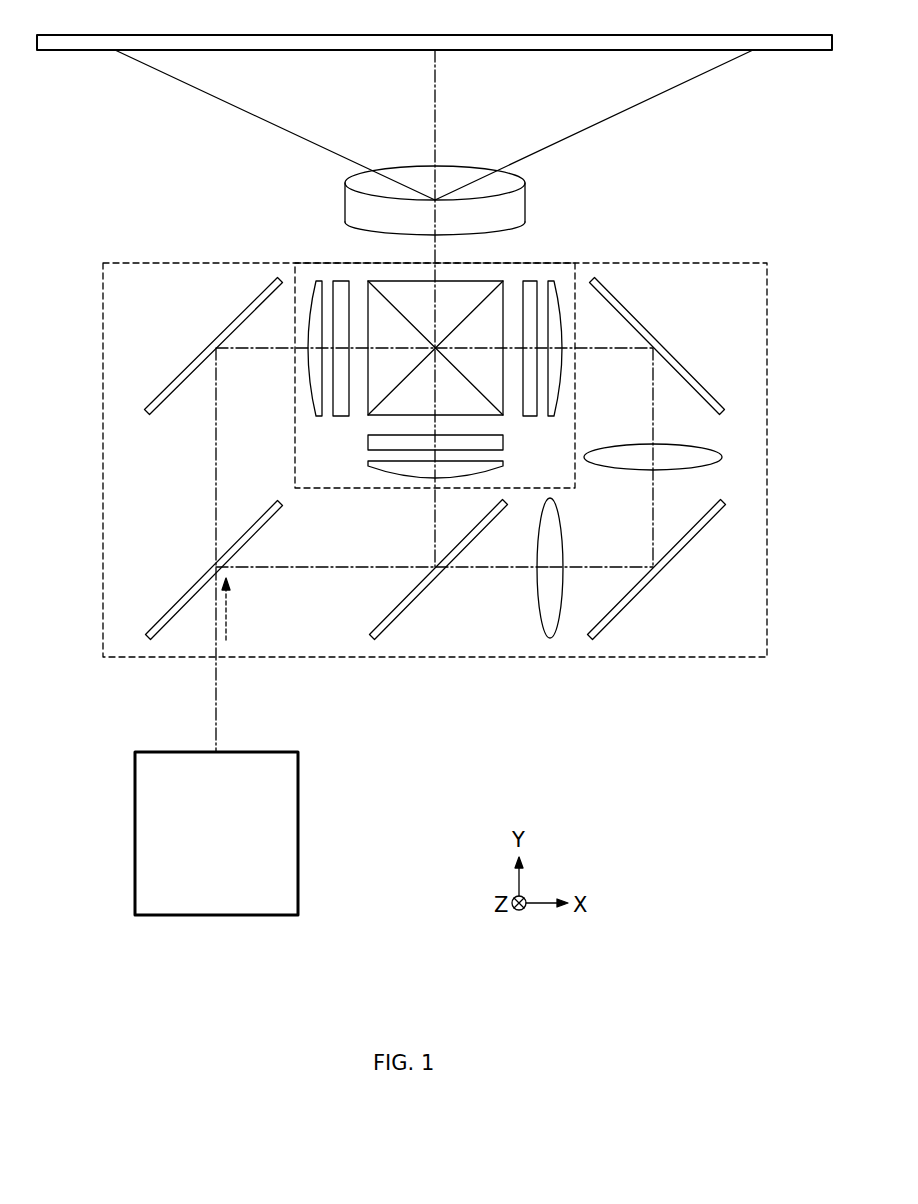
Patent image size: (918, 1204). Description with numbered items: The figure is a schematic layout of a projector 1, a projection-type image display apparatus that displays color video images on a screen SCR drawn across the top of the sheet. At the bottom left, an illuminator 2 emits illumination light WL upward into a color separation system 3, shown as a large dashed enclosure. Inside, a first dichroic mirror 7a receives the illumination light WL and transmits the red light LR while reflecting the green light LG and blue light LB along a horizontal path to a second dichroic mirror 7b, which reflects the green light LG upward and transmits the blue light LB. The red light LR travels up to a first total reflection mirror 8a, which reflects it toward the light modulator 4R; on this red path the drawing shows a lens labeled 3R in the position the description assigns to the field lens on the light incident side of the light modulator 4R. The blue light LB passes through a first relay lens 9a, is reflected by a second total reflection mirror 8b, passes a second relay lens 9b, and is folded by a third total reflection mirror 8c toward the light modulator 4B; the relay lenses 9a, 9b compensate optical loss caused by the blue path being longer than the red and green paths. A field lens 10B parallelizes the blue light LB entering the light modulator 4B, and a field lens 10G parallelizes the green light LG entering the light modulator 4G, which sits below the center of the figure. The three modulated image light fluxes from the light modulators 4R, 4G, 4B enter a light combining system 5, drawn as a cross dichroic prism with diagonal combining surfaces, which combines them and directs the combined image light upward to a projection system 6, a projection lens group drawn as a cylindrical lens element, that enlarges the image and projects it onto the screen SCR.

The projector 1 is at (770, 238).
The illuminator 2 is at (298, 774).
The color separation system 3 is at (103, 402).
The light combining system 5 is at (450, 288).
The projection system 6 is at (418, 184).
The red light modulation device 3R is at (312, 281).
The light modulator 4R is at (341, 281).
The light modulator 4B is at (530, 281).
The field lens 10B is at (550, 281).
The light modulator 4G is at (368, 441).
The field lens 10G is at (368, 468).
The first dichroic mirror 7a is at (180, 597).
The second dichroic mirror 7b is at (413, 598).
The first total reflection mirror 8a is at (188, 367).
The second total reflection mirror 8b is at (680, 555).
The third total reflection mirror 8c is at (682, 362).
The first relay lens 9a is at (537, 572).
The second relay lens 9b is at (722, 455).
The screen SCR is at (797, 51).
The red light LR is at (216, 481).
The green light LG is at (435, 525).
The blue light LB is at (653, 521).
The illumination light WL is at (226, 622).